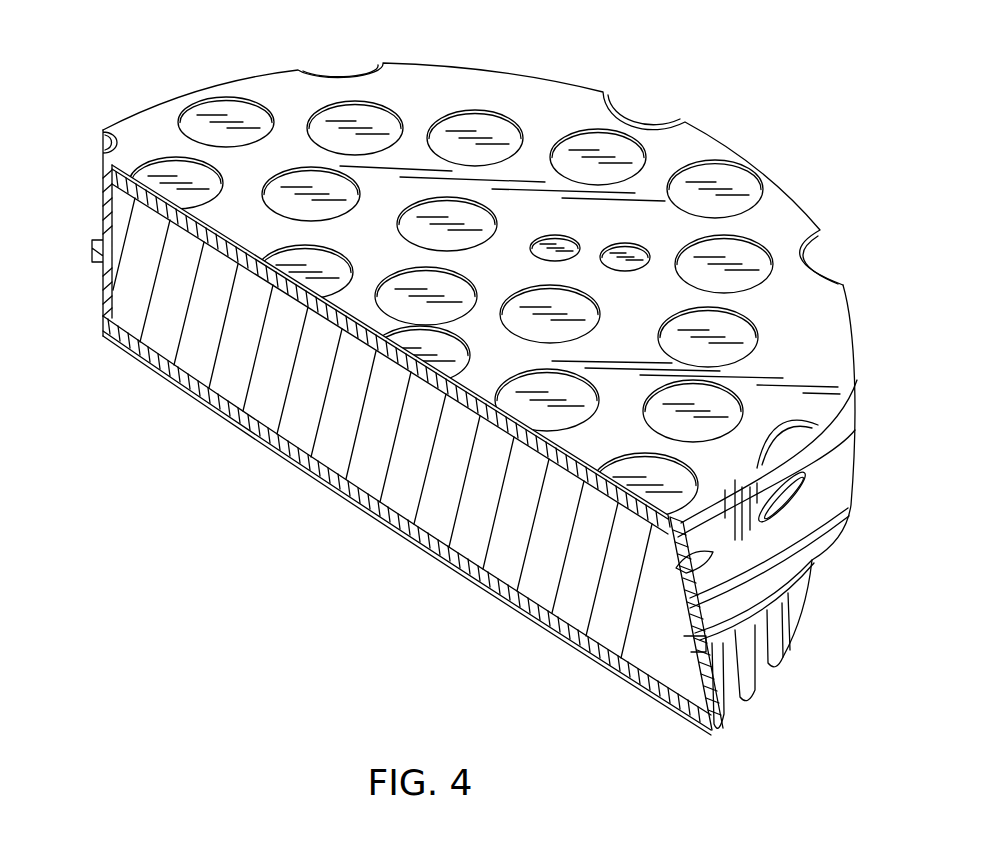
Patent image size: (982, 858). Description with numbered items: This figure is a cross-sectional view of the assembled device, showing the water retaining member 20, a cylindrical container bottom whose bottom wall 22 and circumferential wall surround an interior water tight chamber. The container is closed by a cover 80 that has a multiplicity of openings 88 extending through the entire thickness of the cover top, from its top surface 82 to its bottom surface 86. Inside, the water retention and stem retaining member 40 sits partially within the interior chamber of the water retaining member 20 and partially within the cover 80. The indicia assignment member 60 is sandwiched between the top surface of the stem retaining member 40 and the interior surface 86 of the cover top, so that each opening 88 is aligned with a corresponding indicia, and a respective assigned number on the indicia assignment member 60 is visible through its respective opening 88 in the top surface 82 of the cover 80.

The water retaining member 20 is at (781, 704).
The bottom wall 22 is at (365, 500).
The water retention and stem retaining member 40 is at (168, 341).
The indicia assignment member 60 is at (657, 537).
The cover 80 is at (423, 52).
The top surface 82 is at (509, 92).
The bottom surface 86 is at (101, 156).
The openings 88 is at (208, 107).